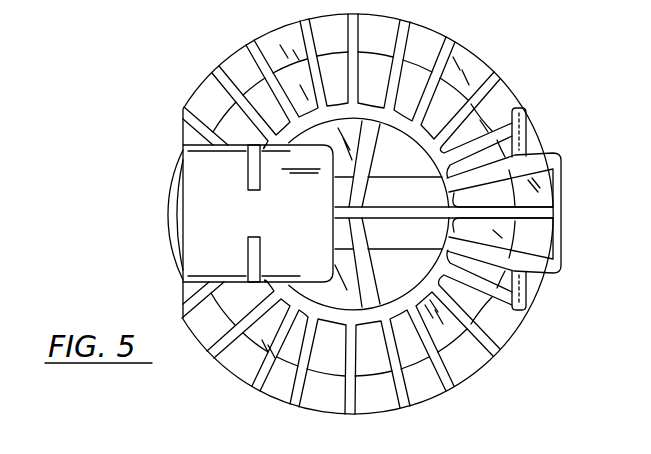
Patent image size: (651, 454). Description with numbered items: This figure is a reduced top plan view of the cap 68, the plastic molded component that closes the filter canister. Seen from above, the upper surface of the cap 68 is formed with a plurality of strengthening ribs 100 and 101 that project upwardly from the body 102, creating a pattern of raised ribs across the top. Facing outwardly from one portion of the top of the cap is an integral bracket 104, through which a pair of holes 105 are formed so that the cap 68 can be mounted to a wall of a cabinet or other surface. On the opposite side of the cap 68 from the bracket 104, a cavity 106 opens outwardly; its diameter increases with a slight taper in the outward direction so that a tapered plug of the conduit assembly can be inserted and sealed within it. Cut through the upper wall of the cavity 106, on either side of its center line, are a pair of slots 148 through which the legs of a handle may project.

The cap 68 is at (271, 411).
The strengthening ribs 100 is at (492, 118).
The strengthening ribs 101 is at (374, 160).
The body 102 is at (471, 58).
The bracket 104 is at (549, 149).
The holes 105 is at (528, 122).
The cavity 106 is at (252, 176).
The slots 148 is at (254, 250).